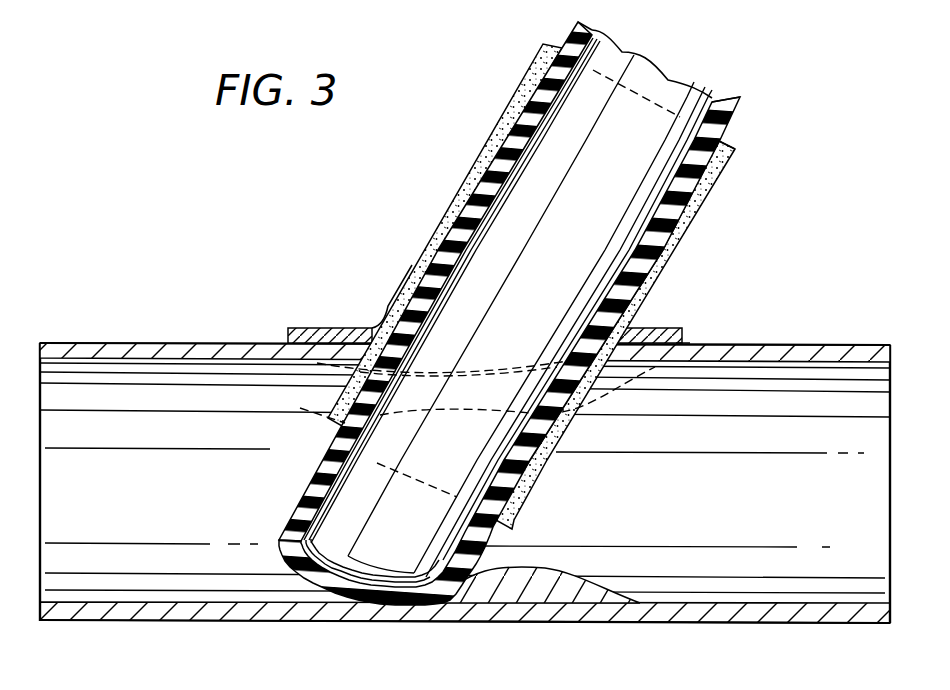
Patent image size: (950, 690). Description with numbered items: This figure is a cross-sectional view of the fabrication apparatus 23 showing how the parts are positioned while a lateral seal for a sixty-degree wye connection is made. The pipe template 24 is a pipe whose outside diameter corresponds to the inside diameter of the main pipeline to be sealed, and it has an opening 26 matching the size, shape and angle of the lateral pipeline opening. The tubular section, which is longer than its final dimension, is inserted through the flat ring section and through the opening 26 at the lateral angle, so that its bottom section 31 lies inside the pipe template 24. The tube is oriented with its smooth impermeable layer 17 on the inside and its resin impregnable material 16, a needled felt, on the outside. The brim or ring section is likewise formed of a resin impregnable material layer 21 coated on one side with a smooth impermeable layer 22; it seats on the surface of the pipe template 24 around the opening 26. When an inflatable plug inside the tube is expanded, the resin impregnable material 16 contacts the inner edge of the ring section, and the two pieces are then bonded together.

The resin impregnable material 16 is at (705, 200).
The impermeable layer 17 is at (713, 145).
The resin impregnable material layer 21 is at (658, 328).
The impermeable layer 22 is at (679, 342).
The apparatus 23 is at (234, 630).
The pipe template 24 is at (108, 348).
The opening 26 is at (392, 300).
The bottom section 31 is at (560, 447).